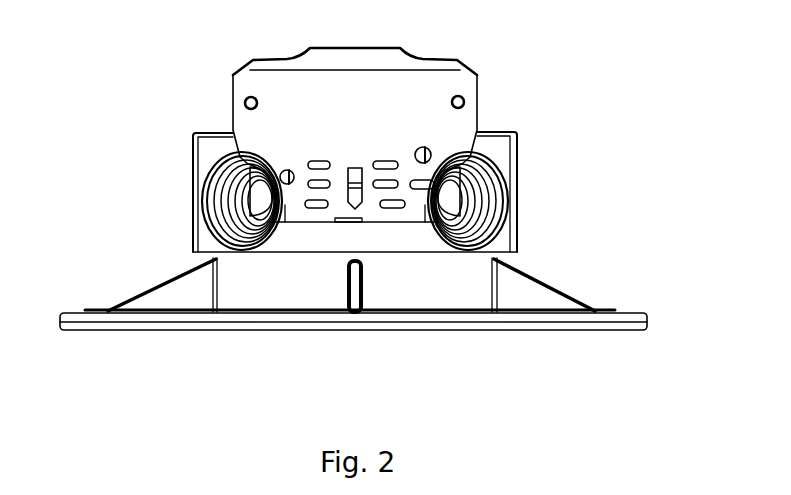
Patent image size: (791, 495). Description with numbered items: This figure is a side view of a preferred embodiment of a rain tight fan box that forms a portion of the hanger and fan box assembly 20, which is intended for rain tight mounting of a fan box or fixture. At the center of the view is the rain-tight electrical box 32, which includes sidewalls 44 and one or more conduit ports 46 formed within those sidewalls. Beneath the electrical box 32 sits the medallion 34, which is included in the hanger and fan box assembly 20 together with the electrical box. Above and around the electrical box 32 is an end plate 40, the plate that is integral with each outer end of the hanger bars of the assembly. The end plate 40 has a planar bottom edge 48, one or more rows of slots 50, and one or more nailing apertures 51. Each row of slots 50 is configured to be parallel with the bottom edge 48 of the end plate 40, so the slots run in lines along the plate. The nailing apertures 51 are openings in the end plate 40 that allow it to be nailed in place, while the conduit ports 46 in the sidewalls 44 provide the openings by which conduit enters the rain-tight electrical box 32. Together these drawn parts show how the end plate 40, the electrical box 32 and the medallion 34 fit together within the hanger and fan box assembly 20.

The hanger and fan box assembly 20 is at (84, 88).
The rain-tight electrical box 32 is at (515, 158).
The medallion 34 is at (647, 317).
The end plate 40 is at (378, 113).
The sidewalls 44 is at (311, 235).
The conduit ports 46 is at (493, 203).
The planar bottom edge 48 is at (423, 263).
The row of slots 50 is at (308, 159).
The nailing apertures 51 is at (465, 102).